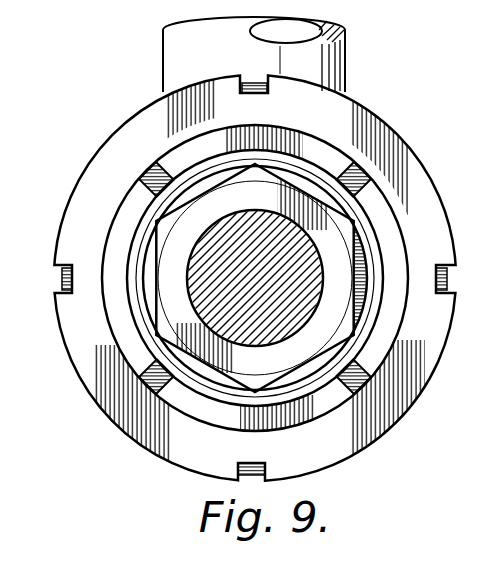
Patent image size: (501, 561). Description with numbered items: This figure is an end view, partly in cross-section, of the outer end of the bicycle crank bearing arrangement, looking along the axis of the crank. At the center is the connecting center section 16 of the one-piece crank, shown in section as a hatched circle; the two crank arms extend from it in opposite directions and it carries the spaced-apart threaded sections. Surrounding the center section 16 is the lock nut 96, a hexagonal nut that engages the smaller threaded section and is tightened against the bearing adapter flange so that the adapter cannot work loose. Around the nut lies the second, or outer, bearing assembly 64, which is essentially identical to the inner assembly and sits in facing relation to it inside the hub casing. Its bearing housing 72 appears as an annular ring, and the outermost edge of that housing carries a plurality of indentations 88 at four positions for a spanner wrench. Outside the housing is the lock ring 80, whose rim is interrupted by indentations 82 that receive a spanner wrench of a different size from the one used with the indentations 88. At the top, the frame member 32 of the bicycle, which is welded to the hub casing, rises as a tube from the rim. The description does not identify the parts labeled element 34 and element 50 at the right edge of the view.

The connecting center section 16 is at (218, 310).
The frame member 32 is at (345, 63).
The housing portion 34 is at (318, 278).
The housing member 50 is at (492, 371).
The second bearing assembly 64 is at (437, 168).
The bearing housing 72 is at (127, 211).
The lock ring 80 is at (387, 134).
The indentations 82 is at (447, 277).
The indentations 88 is at (147, 171).
The lock nut 96 is at (258, 378).